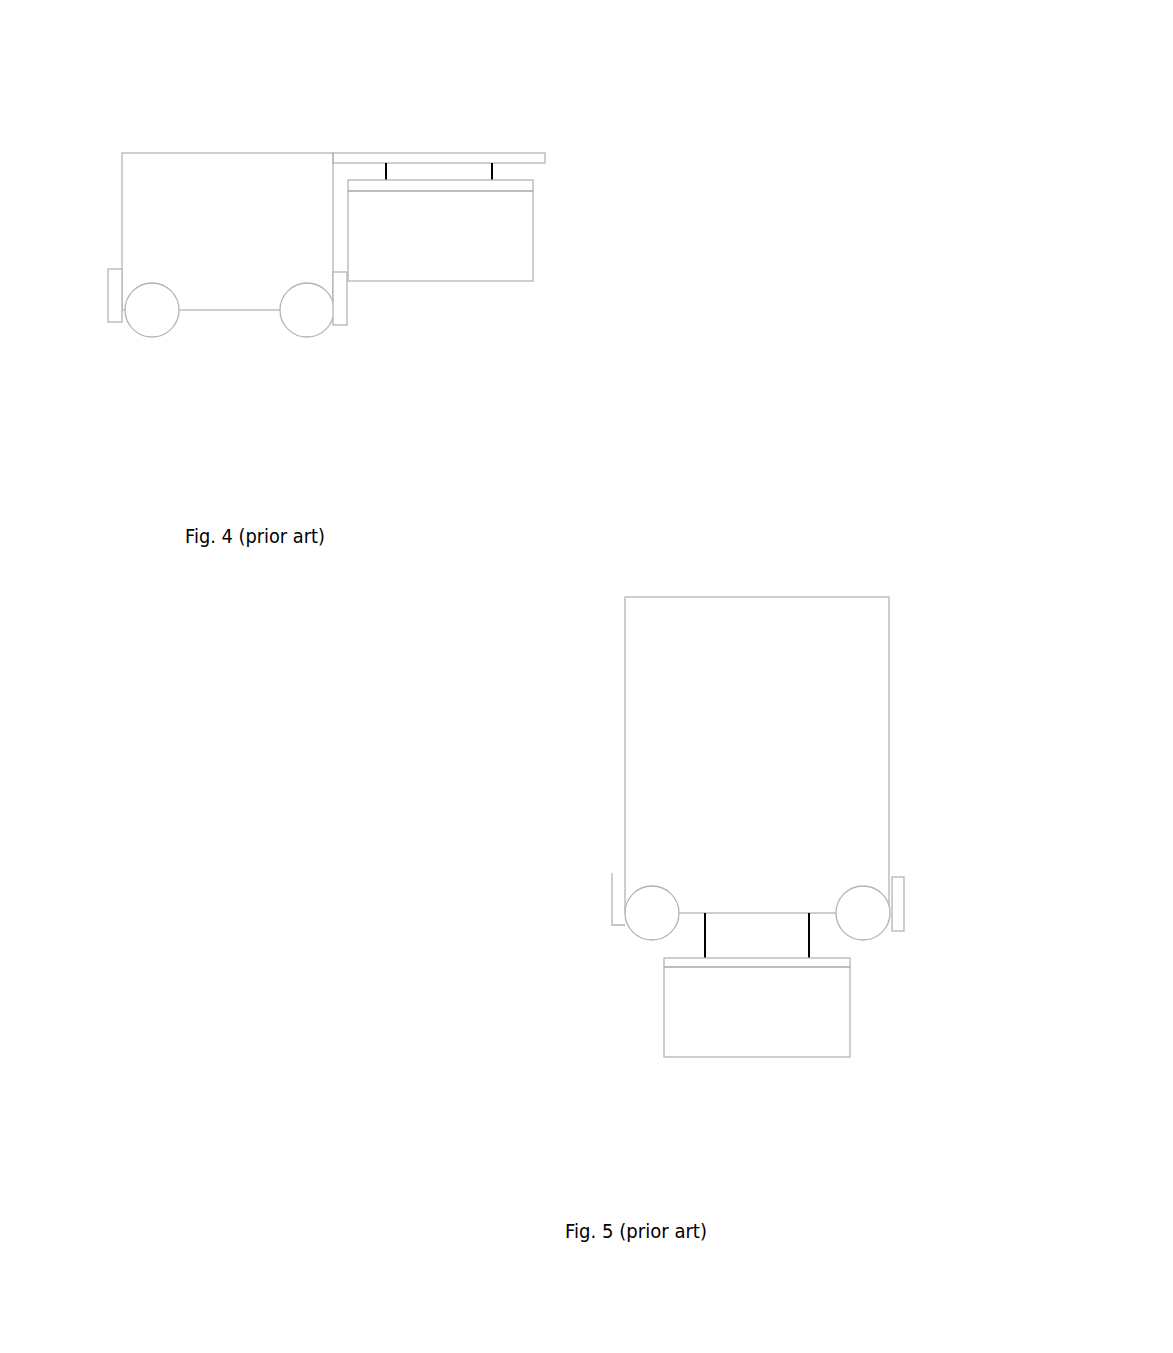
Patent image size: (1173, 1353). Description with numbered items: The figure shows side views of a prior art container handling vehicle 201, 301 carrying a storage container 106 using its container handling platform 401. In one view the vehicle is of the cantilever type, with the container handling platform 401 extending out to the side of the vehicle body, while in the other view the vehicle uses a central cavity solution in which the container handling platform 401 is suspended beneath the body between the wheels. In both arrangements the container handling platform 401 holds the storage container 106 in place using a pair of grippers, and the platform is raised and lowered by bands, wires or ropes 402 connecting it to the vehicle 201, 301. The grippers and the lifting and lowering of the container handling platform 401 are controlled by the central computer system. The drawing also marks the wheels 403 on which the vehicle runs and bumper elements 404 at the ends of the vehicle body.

In FIG. 4, the storage container 106 is at (442, 282).
In FIG. 5, the storage container 106 is at (758, 1058).
In FIG. 4, the prior art storage container vehicle 201 is at (228, 152).
In FIG. 5, the prior art cantilever storage container vehicle 301 is at (758, 597).
In FIG. 4, the container handling platform 401 is at (535, 183).
In FIG. 5, the container handling platform 401 is at (663, 961).
In FIG. 4, the bands, wires or ropes 402 is at (492, 169).
In FIG. 5, the bands, wires or ropes 402 is at (702, 930).
In FIG. 4, the wheel 403 is at (307, 338).
In FIG. 5, the wheel 403 is at (630, 931).
In FIG. 4, the bumper 404 is at (115, 325).
In FIG. 5, the bumper 404 is at (905, 902).